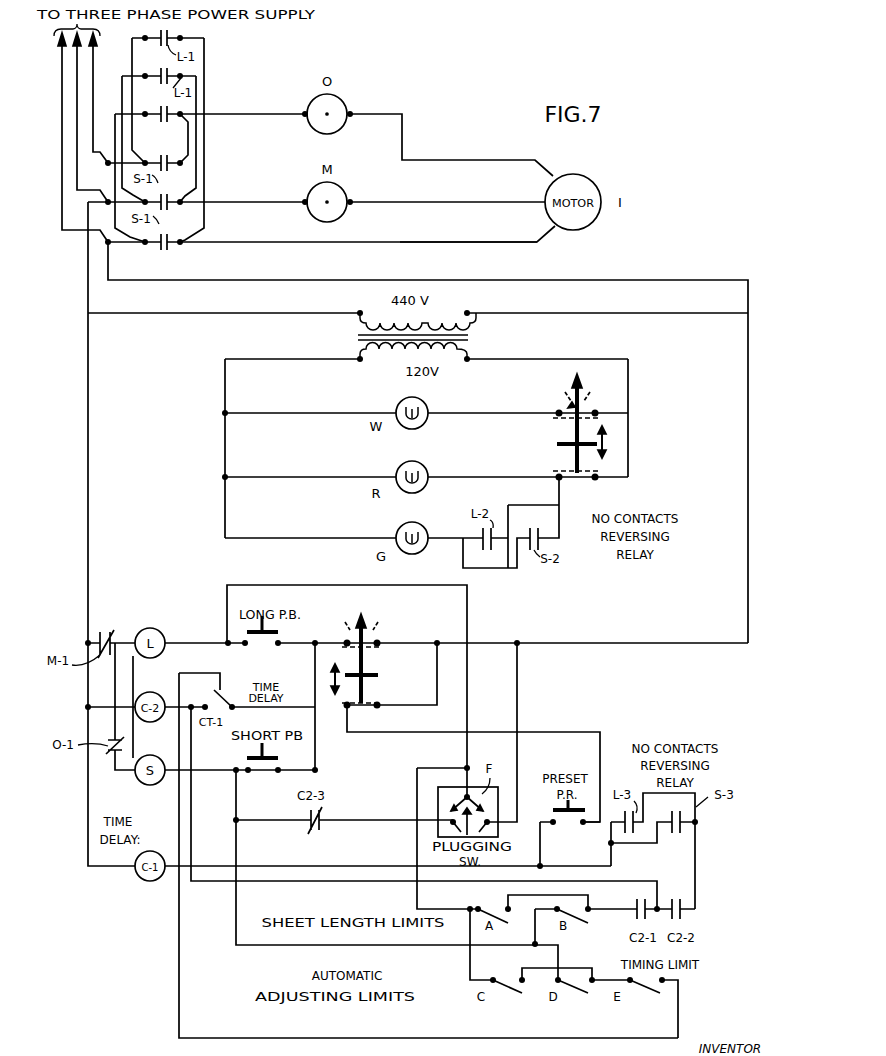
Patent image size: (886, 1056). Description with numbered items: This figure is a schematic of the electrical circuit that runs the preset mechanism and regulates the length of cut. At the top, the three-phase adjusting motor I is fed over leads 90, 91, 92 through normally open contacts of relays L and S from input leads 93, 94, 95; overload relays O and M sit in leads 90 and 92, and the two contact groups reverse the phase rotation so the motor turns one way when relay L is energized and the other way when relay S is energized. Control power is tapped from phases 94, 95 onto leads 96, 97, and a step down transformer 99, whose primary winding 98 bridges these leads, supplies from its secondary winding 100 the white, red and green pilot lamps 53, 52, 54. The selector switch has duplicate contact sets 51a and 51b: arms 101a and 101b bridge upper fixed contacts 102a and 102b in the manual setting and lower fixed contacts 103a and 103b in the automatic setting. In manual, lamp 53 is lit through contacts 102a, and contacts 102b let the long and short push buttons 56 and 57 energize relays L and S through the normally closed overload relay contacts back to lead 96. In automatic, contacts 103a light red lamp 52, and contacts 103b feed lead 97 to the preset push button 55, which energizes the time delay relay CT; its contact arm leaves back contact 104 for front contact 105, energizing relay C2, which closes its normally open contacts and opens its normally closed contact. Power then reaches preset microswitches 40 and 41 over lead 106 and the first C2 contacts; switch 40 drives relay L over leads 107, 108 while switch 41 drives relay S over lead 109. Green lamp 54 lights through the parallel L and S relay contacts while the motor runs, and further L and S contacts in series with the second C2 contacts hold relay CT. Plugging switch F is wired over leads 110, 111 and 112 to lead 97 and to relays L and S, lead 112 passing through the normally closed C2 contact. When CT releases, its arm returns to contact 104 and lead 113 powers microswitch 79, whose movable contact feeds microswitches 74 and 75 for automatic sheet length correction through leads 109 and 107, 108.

The preset selector microswitch 40 is at (502, 907).
The preset selector microswitch 41 is at (588, 916).
The selector switch contact set 51a is at (586, 421).
The selector switch contact set 51b is at (370, 649).
The red pilot lamp 52 is at (428, 477).
The white pilot lamp 53 is at (428, 412).
The green pilot lamp 54 is at (422, 537).
The preset push button 55 is at (571, 821).
The long push button 56 is at (262, 609).
The short push button 57 is at (262, 735).
The microswitch 74 is at (574, 995).
The microswitch 75 is at (505, 995).
The microswitch 79 is at (642, 993).
The motor lead 90 is at (460, 160).
The motor lead 91 is at (468, 198).
The motor lead 92 is at (451, 242).
The input lead 93 is at (90, 58).
The input lead 94 is at (77, 90).
The input lead 95 is at (63, 124).
The power lead 96 is at (86, 268).
The power lead 97 is at (108, 270).
The primary winding 98 is at (454, 320).
The step down transformer 99 is at (437, 334).
The secondary winding 100 is at (388, 363).
The contact arm 101a is at (557, 444).
The contact arm 101b is at (378, 677).
The upper fixed contacts 102a is at (555, 421).
The upper fixed contacts 102b is at (366, 651).
The lower fixed contacts 103a is at (555, 473).
The lower fixed contacts 103b is at (368, 705).
The back contact 104 is at (236, 692).
The front contact 105 is at (207, 705).
The lead 106 is at (316, 884).
The lead 107 is at (417, 789).
The lead 108 is at (467, 753).
The lead 109 is at (275, 949).
The lead 110 is at (517, 698).
The lead 111 is at (470, 621).
The lead 112 is at (334, 828).
The lead 113 is at (262, 1039).